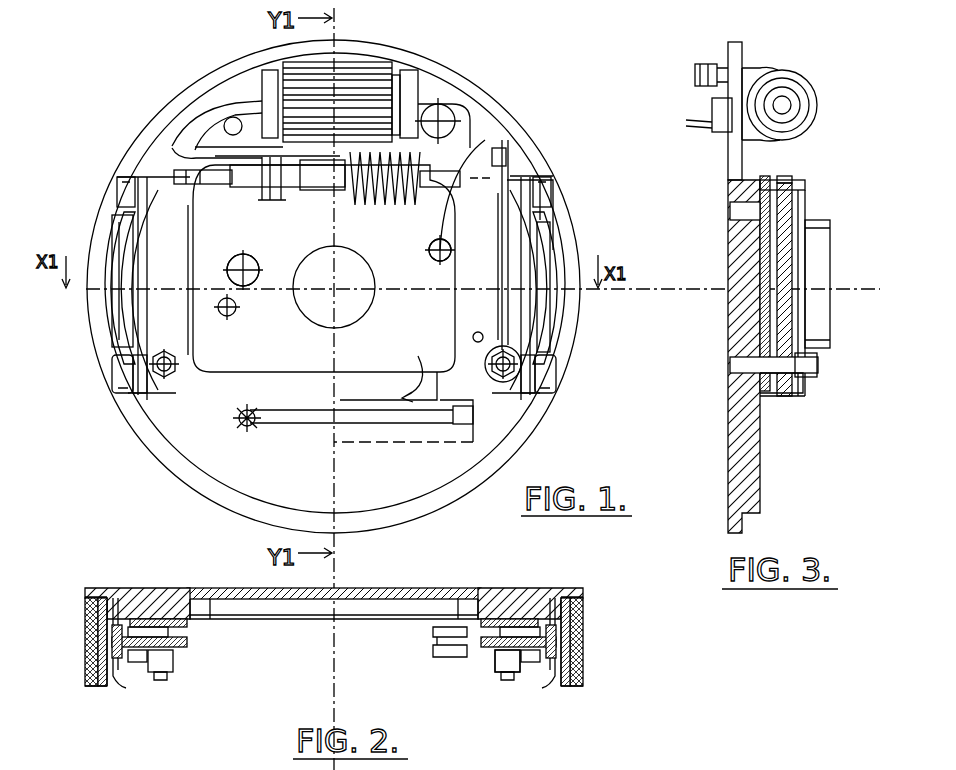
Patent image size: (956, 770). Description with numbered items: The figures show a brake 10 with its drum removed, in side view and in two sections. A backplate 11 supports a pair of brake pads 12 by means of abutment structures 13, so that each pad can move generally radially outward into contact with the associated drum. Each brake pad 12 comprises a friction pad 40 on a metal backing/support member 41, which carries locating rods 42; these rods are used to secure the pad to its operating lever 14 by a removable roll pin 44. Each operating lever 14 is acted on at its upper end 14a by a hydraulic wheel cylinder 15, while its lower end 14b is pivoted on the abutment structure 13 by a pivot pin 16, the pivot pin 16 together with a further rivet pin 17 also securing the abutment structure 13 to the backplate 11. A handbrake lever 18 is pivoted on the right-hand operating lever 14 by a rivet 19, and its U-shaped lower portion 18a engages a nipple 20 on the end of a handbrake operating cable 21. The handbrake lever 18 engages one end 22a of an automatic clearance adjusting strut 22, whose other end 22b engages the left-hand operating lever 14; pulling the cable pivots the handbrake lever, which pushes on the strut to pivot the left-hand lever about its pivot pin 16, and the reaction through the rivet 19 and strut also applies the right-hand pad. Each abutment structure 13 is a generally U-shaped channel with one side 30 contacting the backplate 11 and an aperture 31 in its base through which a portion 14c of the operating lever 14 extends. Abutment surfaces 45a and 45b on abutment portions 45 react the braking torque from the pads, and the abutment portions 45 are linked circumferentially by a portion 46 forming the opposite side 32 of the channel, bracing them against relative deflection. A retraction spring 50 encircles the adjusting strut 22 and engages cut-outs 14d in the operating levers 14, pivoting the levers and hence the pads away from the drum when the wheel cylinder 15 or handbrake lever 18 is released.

In FIG. 1, the brake 10 is at (333, 281).
In FIG. 1, the backplate 11 is at (226, 452).
In FIG. 3, the backplate 11 is at (752, 448).
In FIG. 2, the backplate 11 is at (162, 588).
In FIG. 1, the brake pad 12 is at (112, 252).
In FIG. 3, the brake pad 12 is at (816, 256).
In FIG. 1, the abutment structure 13 is at (130, 374).
In FIG. 1, the operating lever 14 is at (190, 212).
In FIG. 3, the operating lever 14 is at (786, 322).
In FIG. 1, the upper end of operating lever 14a is at (256, 100).
In FIG. 1, the lower end of operating lever 14b is at (197, 366).
In FIG. 1, the portion of operating lever 14c is at (126, 276).
In FIG. 2, the portion of operating lever 14c is at (130, 676).
In FIG. 1, the cut-out 14d is at (186, 158).
In FIG. 1, the hydraulic wheel cylinder 15 is at (366, 84).
In FIG. 3, the hydraulic wheel cylinder 15 is at (784, 72).
In FIG. 1, the pivot pin 16 is at (516, 378).
In FIG. 3, the pivot pin 16 is at (806, 372).
In FIG. 2, the pivot pin 16 is at (514, 674).
In FIG. 3, the rivet pin 17 is at (752, 208).
In FIG. 1, the handbrake lever 18 is at (468, 325).
In FIG. 1, the U-shaped lower portion of handbrake lever 18a is at (446, 432).
In FIG. 2, the U-shaped lower portion of handbrake lever 18a is at (446, 658).
In FIG. 1, the rivet 19 is at (446, 108).
In FIG. 1, the nipple 20 is at (504, 384).
In FIG. 1, the handbrake operating cable 21 is at (366, 412).
In FIG. 1, the automatic brake pad clearance adjusting strut 22 is at (331, 172).
In FIG. 1, the end of adjusting strut 22a is at (458, 124).
In FIG. 1, the other end of adjusting strut 22b is at (184, 178).
In FIG. 3, the side of channel structure 30 is at (762, 290).
In FIG. 2, the side of channel structure 30 is at (180, 616).
In FIG. 2, the aperture 31 is at (584, 682).
In FIG. 2, the opposite side of channel structure 32 is at (138, 668).
In FIG. 2, the friction pad 40 is at (98, 626).
In FIG. 2, the metal backing/support member 41 is at (86, 652).
In FIG. 2, the locating rod 42 is at (130, 596).
In FIG. 2, the roll pin 44 is at (108, 620).
In FIG. 1, the abutment portion 45 is at (378, 287).
In FIG. 1, the abutment surface 45a is at (122, 186).
In FIG. 3, the abutment surface 45a is at (730, 226).
In FIG. 1, the abutment surface 45b is at (120, 366).
In FIG. 1, the linking portion 46 is at (142, 306).
In FIG. 1, the retraction spring 50 is at (364, 202).